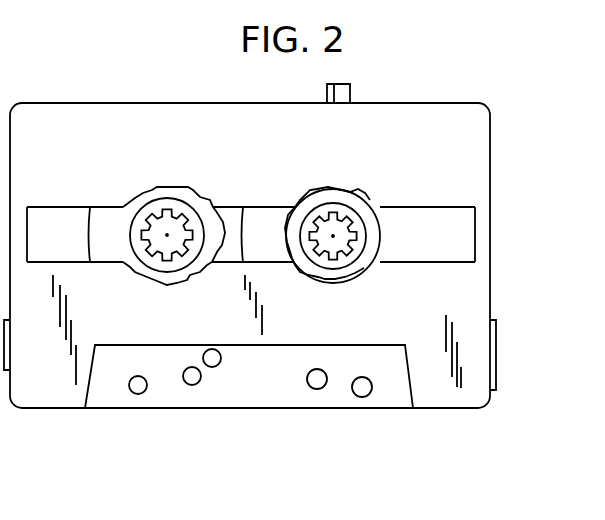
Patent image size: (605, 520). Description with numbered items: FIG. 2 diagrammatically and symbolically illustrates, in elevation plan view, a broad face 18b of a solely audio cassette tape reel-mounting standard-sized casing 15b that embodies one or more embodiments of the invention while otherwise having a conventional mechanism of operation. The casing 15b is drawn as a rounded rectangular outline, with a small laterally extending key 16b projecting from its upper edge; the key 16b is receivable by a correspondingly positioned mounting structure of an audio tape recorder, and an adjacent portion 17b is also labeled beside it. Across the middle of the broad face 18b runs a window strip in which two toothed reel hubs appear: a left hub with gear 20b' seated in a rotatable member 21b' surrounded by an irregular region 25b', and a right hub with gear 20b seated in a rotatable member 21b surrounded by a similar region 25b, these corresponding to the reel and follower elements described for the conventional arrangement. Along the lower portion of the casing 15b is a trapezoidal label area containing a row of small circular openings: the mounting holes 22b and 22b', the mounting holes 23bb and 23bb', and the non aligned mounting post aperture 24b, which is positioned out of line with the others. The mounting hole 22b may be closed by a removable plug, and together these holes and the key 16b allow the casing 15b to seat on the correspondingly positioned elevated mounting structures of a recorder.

The standard-sized casing 15b is at (466, 101).
The laterally extending key 16b is at (350, 96).
The tab portion 17b is at (332, 101).
The broad face 18b is at (291, 127).
The hub gear 20b is at (373, 257).
The hub gear 20b' is at (164, 194).
The hub 21b is at (383, 221).
The hub 21b' is at (139, 217).
The hub surround 25b is at (342, 215).
The hub surround 25b' is at (204, 217).
The mounting hole 22b is at (107, 414).
The hole 22b' is at (413, 414).
The mounting hole 23bb is at (189, 410).
The mounting hole 23bb' is at (335, 410).
The non aligned mounting post aperture 24b is at (218, 363).